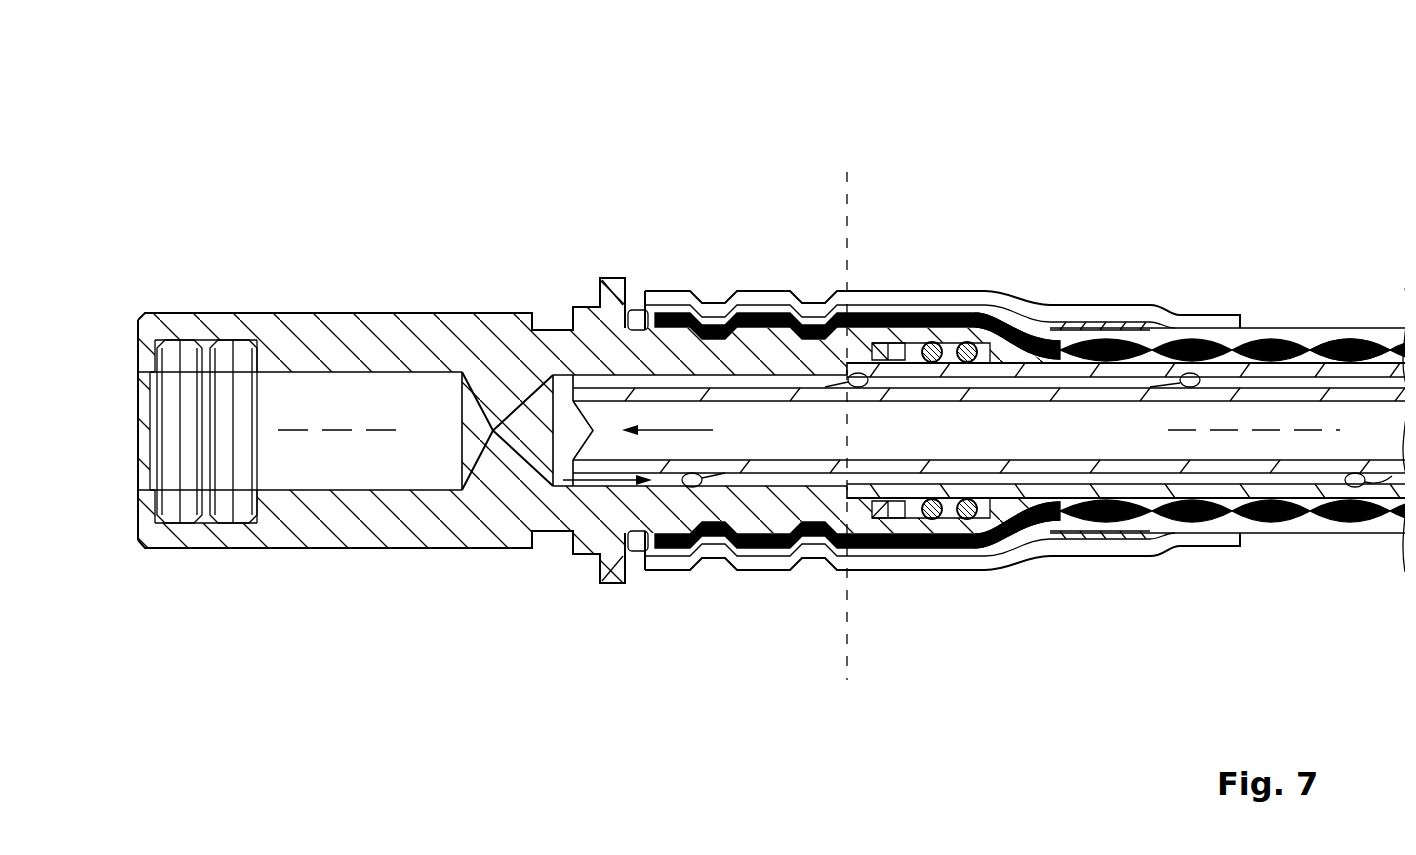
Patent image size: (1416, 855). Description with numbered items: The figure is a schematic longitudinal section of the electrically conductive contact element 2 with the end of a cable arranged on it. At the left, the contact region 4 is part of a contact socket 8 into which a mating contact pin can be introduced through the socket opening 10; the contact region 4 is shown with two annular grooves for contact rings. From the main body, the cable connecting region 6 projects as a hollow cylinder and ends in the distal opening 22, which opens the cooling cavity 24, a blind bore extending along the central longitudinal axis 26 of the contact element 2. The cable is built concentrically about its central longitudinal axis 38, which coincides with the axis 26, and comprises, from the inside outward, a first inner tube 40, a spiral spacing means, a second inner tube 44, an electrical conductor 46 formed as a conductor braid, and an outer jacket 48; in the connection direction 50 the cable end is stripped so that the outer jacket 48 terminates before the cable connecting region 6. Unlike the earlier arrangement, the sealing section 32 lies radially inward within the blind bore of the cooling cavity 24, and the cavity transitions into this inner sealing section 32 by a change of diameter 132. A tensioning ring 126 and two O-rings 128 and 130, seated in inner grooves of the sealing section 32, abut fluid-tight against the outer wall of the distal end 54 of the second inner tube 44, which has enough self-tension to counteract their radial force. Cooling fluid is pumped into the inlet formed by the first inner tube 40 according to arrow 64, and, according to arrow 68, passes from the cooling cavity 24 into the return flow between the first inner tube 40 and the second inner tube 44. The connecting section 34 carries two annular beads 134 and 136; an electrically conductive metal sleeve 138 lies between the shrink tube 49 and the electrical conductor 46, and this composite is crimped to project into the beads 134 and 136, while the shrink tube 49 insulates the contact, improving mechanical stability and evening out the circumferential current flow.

The contact element 2 is at (383, 120).
The contact region 4 is at (253, 304).
The cable connecting region 6 is at (802, 104).
The contact socket 8 is at (455, 340).
The socket opening 10 is at (126, 436).
The distal opening 22 is at (1007, 365).
The cooling cavity 24 is at (543, 447).
The central longitudinal axis 26 is at (288, 430).
The sealing section 32 is at (925, 337).
The connecting section 34 is at (668, 248).
The central longitudinal axis 38 is at (1327, 430).
The first inner tube 40 is at (1380, 470).
The second inner tube 44 is at (1265, 493).
The electrical conductor 46 is at (1273, 343).
The outer jacket 48 is at (1313, 347).
The shrink tube 49 is at (1140, 330).
The connection direction 50 is at (1135, 92).
The distal end 54 is at (847, 182).
The arrow 64 is at (680, 440).
The arrow 68 is at (597, 487).
The tensioning ring 126 is at (872, 342).
The O-ring 128 is at (960, 332).
The O-ring 130 is at (1007, 323).
The change of diameter 132 is at (836, 361).
The annular bead 134 is at (713, 230).
The annular bead 136 is at (805, 235).
The metal sleeve 138 is at (1105, 322).